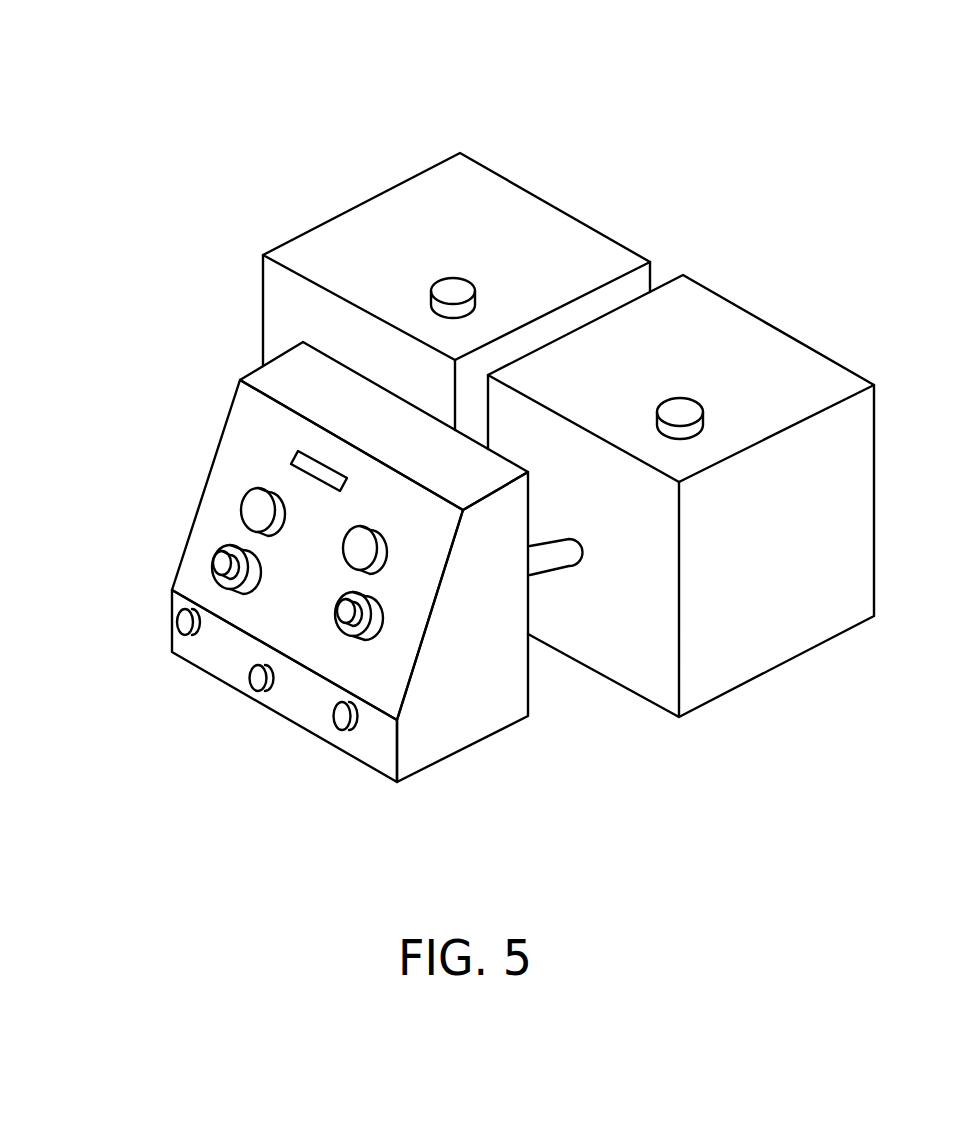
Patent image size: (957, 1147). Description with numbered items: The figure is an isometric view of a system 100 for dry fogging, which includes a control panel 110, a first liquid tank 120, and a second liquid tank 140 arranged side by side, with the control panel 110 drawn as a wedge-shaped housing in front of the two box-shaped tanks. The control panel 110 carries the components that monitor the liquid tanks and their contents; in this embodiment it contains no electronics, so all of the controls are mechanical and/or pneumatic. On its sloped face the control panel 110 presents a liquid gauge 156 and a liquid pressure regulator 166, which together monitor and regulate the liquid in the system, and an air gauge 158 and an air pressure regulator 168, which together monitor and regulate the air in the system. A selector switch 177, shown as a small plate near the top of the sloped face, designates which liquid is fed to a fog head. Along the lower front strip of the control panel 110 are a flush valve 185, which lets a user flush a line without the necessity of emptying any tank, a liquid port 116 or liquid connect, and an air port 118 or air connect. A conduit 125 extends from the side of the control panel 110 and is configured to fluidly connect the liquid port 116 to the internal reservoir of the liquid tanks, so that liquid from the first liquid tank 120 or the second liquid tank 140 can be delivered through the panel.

The system for dry fogging 100 is at (254, 52).
The control panel 110 is at (208, 370).
The first liquid tank 120 is at (333, 172).
The second liquid tank 140 is at (741, 274).
The selector switch 177 is at (307, 455).
The liquid gauge 156 is at (250, 494).
The liquid pressure regulator 166 is at (226, 552).
The air gauge 158 is at (358, 557).
The air pressure regulator 168 is at (363, 632).
The flush valve 185 is at (178, 622).
The liquid port 116 is at (250, 678).
The air port 118 is at (343, 731).
The conduit 125 is at (548, 557).